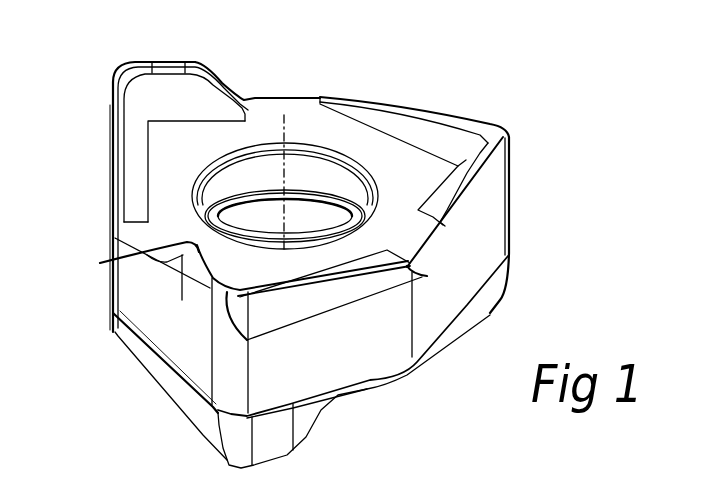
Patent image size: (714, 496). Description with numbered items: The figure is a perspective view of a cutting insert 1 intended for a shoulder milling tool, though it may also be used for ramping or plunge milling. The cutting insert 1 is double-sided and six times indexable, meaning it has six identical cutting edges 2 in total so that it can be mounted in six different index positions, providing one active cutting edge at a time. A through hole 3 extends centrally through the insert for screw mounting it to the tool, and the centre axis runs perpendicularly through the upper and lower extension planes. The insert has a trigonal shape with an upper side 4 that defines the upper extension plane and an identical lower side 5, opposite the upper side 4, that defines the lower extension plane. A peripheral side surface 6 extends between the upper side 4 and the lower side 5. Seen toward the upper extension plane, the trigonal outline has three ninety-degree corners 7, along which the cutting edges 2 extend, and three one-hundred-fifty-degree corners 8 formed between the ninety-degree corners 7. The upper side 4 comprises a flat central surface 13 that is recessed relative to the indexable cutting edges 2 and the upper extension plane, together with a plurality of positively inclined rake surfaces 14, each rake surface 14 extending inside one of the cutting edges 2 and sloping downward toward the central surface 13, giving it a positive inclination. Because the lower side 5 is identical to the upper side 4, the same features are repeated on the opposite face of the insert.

The cutting insert 1 is at (524, 138).
The cutting edges 2 is at (144, 61).
The through hole 3 is at (269, 173).
The upper side 4 is at (378, 124).
The lower side 5 is at (424, 364).
The peripheral side surface 6 is at (336, 357).
The 90° corners 7 is at (127, 71).
The 150° corners 8 is at (123, 228).
The central surface 13 is at (418, 185).
The rake surfaces 14 is at (176, 67).